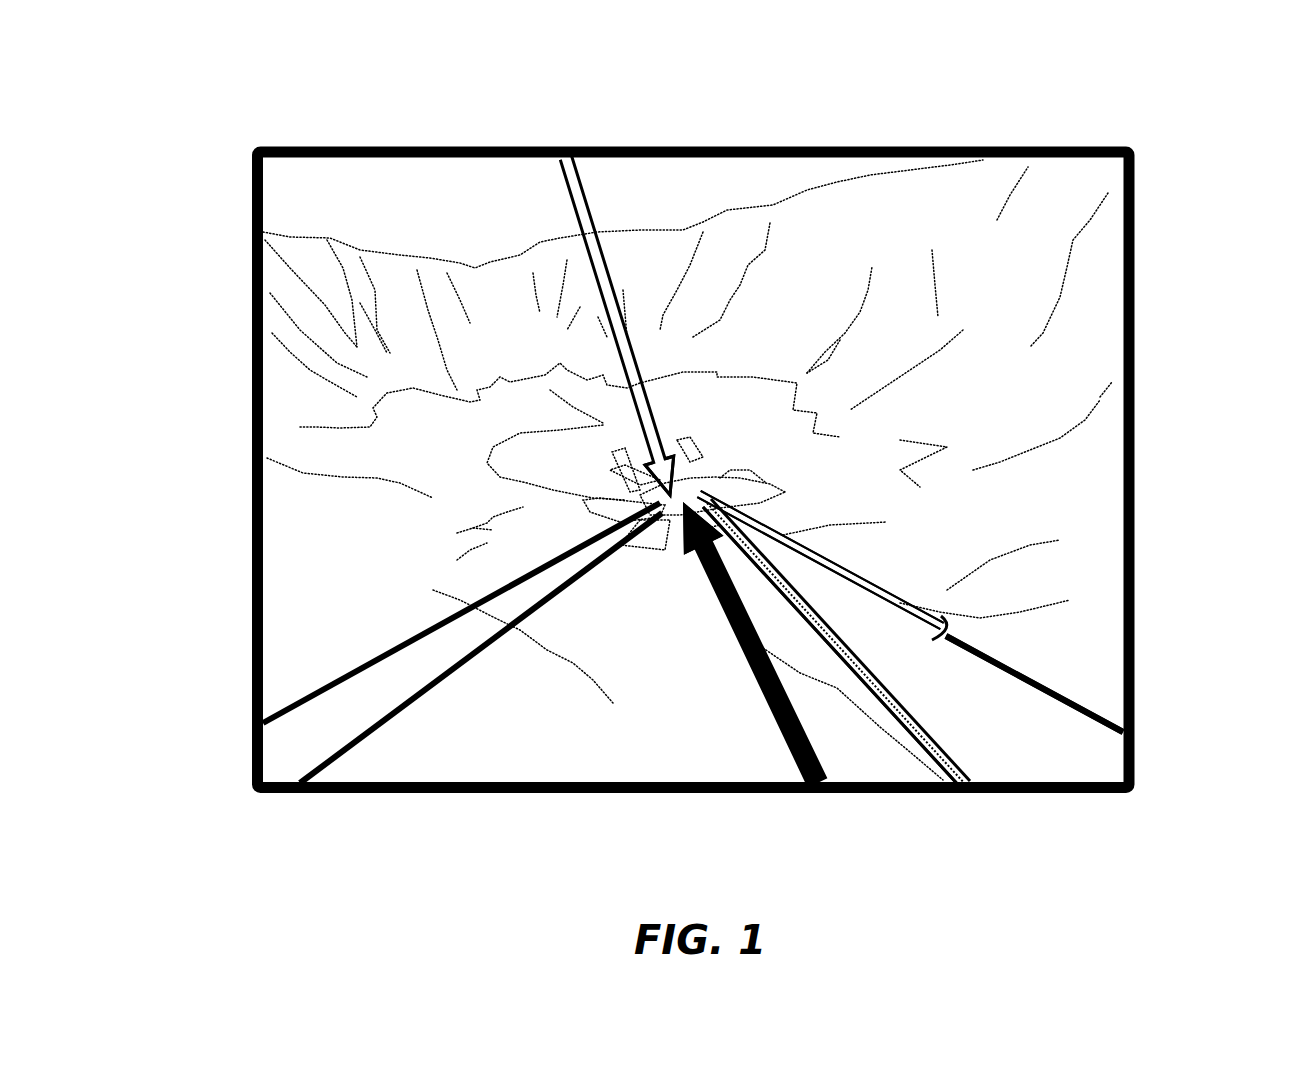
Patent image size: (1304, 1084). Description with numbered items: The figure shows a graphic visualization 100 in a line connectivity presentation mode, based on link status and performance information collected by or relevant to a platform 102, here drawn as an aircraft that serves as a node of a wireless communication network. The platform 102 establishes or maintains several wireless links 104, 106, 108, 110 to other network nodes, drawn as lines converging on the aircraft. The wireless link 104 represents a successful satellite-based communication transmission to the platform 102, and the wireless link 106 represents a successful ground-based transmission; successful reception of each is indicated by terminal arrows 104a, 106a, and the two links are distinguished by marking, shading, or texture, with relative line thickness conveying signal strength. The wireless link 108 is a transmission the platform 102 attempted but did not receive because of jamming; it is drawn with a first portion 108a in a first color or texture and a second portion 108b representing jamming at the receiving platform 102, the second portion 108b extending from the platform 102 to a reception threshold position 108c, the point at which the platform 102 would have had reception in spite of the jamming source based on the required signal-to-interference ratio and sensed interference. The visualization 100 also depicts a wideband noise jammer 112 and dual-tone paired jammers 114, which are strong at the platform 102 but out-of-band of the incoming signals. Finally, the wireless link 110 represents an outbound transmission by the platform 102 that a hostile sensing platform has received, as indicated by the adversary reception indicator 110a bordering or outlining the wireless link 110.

The graphic visualization 100 is at (88, 113).
The platform 102 is at (688, 457).
The wireless link 104 is at (605, 282).
The terminal arrow 104a is at (669, 450).
The wireless link 106 is at (751, 663).
The terminal arrow 106a is at (687, 547).
The wireless link 108 is at (946, 590).
The first portion 108a is at (1040, 687).
The second portion 108b is at (828, 564).
The reception threshold position 108c is at (945, 641).
The wireless link 110 is at (818, 632).
The adversary reception indicator 110a is at (862, 680).
The wideband noise jammer 112 is at (412, 632).
The dual-tone jammers 114 is at (416, 712).